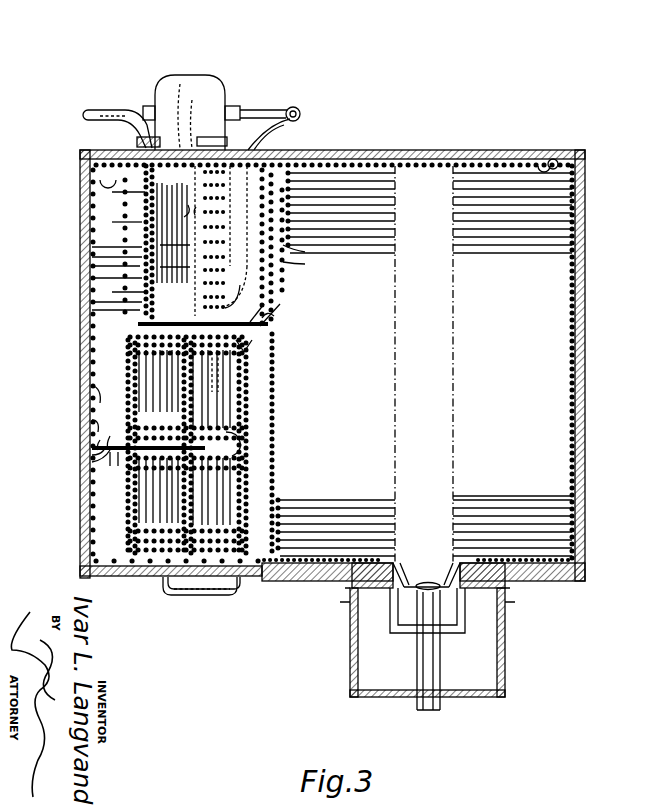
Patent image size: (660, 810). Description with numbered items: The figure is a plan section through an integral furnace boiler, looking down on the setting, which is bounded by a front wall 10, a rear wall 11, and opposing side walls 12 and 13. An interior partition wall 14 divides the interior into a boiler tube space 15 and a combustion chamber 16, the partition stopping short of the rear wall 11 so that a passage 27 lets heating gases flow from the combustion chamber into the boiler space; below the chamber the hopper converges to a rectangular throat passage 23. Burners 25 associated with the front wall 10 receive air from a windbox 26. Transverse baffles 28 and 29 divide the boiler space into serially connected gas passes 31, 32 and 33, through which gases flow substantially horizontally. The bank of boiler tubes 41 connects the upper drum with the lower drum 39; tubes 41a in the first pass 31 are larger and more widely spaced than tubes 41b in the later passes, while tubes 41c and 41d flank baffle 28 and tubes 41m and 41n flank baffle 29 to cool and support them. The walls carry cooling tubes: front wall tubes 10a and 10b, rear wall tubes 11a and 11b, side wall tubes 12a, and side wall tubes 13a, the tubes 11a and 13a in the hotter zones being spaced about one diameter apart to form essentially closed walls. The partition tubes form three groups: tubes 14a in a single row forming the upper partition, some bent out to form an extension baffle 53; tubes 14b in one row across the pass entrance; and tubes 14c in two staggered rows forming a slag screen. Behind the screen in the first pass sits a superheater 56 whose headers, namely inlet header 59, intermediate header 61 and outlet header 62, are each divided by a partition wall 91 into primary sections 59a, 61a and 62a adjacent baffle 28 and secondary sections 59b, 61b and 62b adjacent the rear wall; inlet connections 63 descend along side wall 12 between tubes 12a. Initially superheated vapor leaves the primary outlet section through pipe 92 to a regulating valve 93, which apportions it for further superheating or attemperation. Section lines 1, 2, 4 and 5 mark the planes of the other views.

The section line 1- 1 is at (88, 206).
The section line 2- 2 is at (88, 527).
The section line 4- 4 is at (88, 327).
The section line 5- 5 is at (88, 449).
The front wall 10 is at (273, 580).
The front wall fluid cooling tubes 10a is at (316, 581).
The front wall tubes 10b is at (143, 578).
The rear wall 11 is at (500, 158).
The rear wall fluid cooling tubes 11a is at (552, 162).
The rear wall tubes 11b is at (134, 148).
The side wall 12 is at (84, 371).
The side wall fluid cooling tubes 12a is at (94, 405).
The side wall 13 is at (292, 72).
The side wall fluid cooling tubes 13a is at (533, 505).
The partition wall 14 is at (277, 411).
The partition wall tube group 14a is at (277, 372).
The partition wall tube group 14b is at (292, 205).
The partition wall tube group 14c is at (305, 262).
The boiler tube space 15 is at (180, 447).
The combustion chamber 16 is at (513, 377).
The throat passage 23 is at (424, 364).
The burner 25 is at (441, 648).
The windbox 26 is at (504, 638).
The gas passage 27 is at (292, 232).
The transverse baffle 28 is at (137, 324).
The transverse baffle 29 is at (114, 473).
The first gas pass 31 is at (92, 247).
The second gas pass 32 is at (184, 389).
The third gas pass 33 is at (184, 491).
The lower drum 39 is at (225, 99).
The boiler tubes 41 is at (205, 420).
The first pass boiler tubes 41a is at (272, 178).
The succeeding pass boiler tubes 41b is at (240, 472).
The baffle tubes 41c is at (280, 305).
The baffle tubes 41d is at (234, 352).
The baffle tubes 41m is at (112, 434).
The baffle tubes 41n is at (88, 478).
The extension baffle 53 is at (280, 316).
The superheater 56 is at (191, 205).
The inlet header 59 is at (112, 192).
The primary inlet section 59a is at (112, 292).
The secondary inlet section 59b is at (112, 222).
The intermediate header 61 is at (179, 116).
The primary intermediate section 61a is at (223, 372).
The secondary intermediate section 61b is at (187, 124).
The outlet header 62 is at (205, 145).
The primary outlet section 62a is at (225, 310).
The secondary outlet section 62b is at (222, 228).
The inlet connections 63 is at (92, 269).
The partition wall 91 is at (179, 259).
The pipe 92 is at (300, 120).
The regulating valve 93 is at (295, 107).